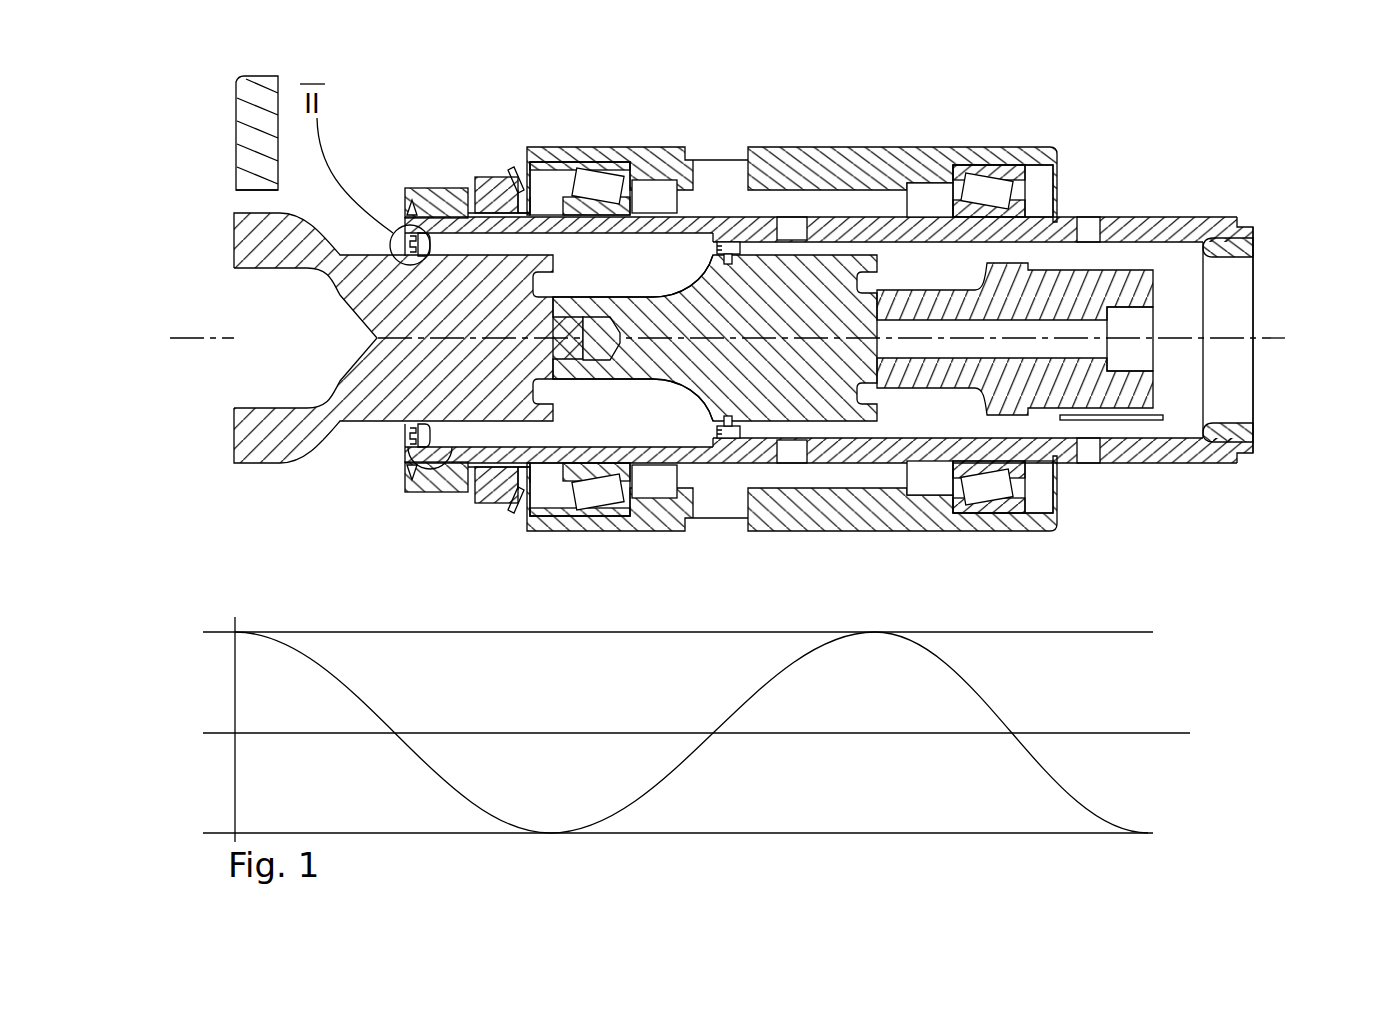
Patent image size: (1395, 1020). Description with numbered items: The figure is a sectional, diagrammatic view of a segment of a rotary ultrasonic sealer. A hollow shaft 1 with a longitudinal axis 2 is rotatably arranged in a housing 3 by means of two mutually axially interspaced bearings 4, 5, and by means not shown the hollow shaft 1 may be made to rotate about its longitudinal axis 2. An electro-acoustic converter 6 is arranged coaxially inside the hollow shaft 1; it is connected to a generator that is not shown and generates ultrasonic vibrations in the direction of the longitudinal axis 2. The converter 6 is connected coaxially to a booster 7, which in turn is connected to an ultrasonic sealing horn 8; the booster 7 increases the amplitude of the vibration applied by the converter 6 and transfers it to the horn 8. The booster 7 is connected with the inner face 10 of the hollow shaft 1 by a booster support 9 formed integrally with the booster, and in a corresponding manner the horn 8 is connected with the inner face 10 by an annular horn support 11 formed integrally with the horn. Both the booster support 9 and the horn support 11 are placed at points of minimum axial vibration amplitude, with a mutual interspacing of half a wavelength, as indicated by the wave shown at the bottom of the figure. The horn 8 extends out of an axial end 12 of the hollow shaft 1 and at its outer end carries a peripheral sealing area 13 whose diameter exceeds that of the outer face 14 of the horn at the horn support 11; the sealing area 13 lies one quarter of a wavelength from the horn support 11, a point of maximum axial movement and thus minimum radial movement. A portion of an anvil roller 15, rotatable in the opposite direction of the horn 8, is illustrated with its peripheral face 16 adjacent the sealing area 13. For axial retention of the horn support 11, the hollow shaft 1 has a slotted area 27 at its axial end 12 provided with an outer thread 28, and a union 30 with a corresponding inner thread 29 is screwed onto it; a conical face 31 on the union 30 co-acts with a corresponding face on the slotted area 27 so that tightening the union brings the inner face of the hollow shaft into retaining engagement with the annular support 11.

The hollow shaft 1 is at (880, 207).
The longitudinal axis 2 is at (1268, 336).
The housing 3 is at (815, 162).
The bearing 4 is at (980, 188).
The bearing 5 is at (676, 240).
The electro-acoustic converter 6 is at (1097, 285).
The booster 7 is at (742, 287).
The ultrasonic sealing horn 8 is at (512, 255).
The booster support 9 is at (713, 434).
The inner face 10 is at (740, 290).
The horn support 11 is at (440, 462).
The axial end 12 is at (397, 441).
The peripheral sealing area 13 is at (250, 464).
The outer face 14 is at (548, 213).
The anvil roller 15 is at (238, 131).
The peripheral face 16 is at (240, 196).
The slotted area 27 is at (467, 477).
The outer thread 28 is at (435, 188).
The inner thread 29 is at (458, 154).
The union 30 is at (412, 188).
The conical face 31 is at (463, 176).